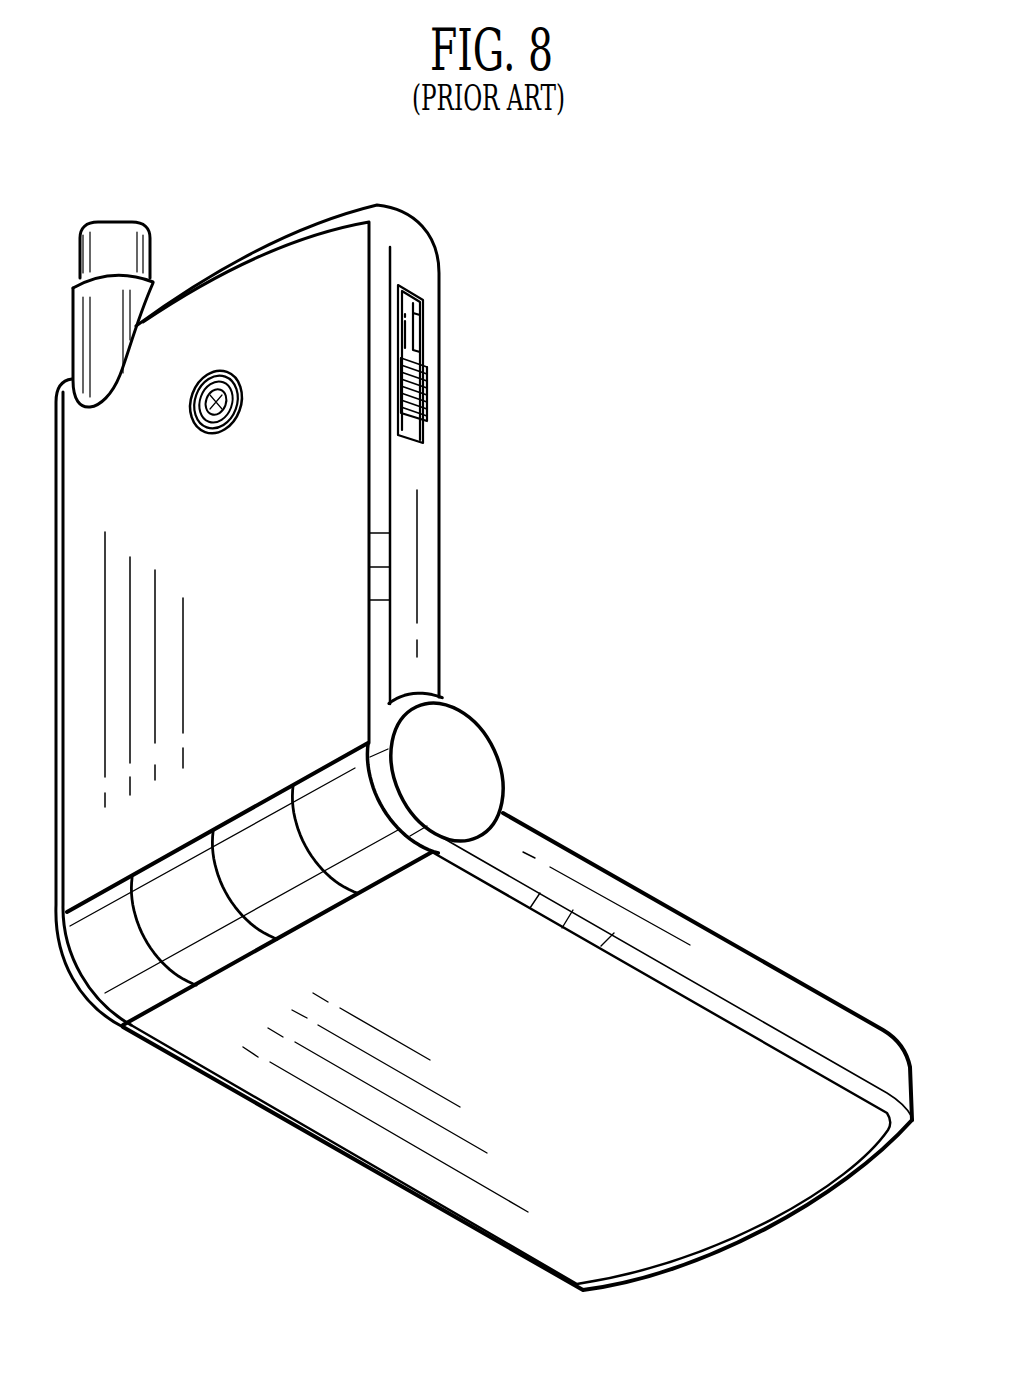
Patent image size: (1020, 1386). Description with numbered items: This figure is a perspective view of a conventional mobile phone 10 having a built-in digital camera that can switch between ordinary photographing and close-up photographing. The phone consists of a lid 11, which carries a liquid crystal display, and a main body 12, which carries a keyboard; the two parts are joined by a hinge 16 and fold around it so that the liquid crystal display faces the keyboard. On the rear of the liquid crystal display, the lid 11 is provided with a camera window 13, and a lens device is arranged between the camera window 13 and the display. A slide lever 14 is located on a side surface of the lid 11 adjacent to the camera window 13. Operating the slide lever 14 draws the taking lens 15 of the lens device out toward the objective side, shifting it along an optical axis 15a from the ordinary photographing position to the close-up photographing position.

The mobile phone 10 is at (637, 302).
The lid 11 is at (480, 329).
The main body 12 is at (611, 847).
The camera window 13 is at (233, 372).
The slide lever 14 is at (417, 384).
The taking lens 15 is at (210, 412).
The optical axis 15a is at (156, 363).
The hinge 16 is at (443, 740).